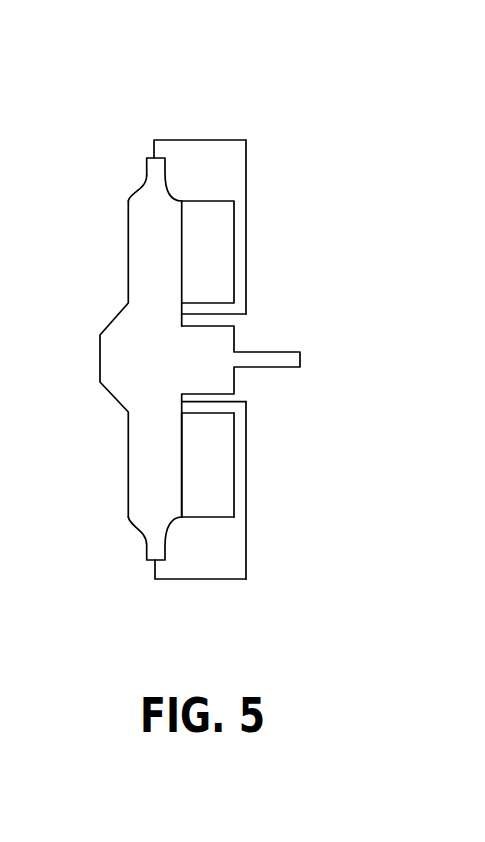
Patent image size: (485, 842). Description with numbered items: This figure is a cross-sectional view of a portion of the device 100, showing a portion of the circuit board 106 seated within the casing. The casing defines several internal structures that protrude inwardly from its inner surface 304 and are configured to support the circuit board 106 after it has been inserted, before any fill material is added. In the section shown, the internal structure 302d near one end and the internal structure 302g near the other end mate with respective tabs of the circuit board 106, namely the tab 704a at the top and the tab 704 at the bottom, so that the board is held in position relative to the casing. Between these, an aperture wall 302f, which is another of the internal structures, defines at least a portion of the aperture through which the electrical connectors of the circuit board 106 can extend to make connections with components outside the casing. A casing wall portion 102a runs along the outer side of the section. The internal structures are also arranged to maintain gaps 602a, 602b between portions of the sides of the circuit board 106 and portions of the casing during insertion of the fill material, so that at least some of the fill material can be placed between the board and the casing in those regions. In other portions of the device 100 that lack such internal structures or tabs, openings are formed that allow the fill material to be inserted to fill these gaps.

The device 100 is at (188, 68).
The housing wall 102a is at (248, 250).
The circuit board 106 is at (152, 227).
The internal structure 302d is at (188, 182).
The aperture wall 302f is at (210, 312).
The internal structure 302g is at (192, 547).
The inner surface 304 is at (232, 450).
The gap 602a is at (212, 230).
The gap 602b is at (217, 485).
The tab 704 is at (152, 540).
The tab 704a is at (156, 172).